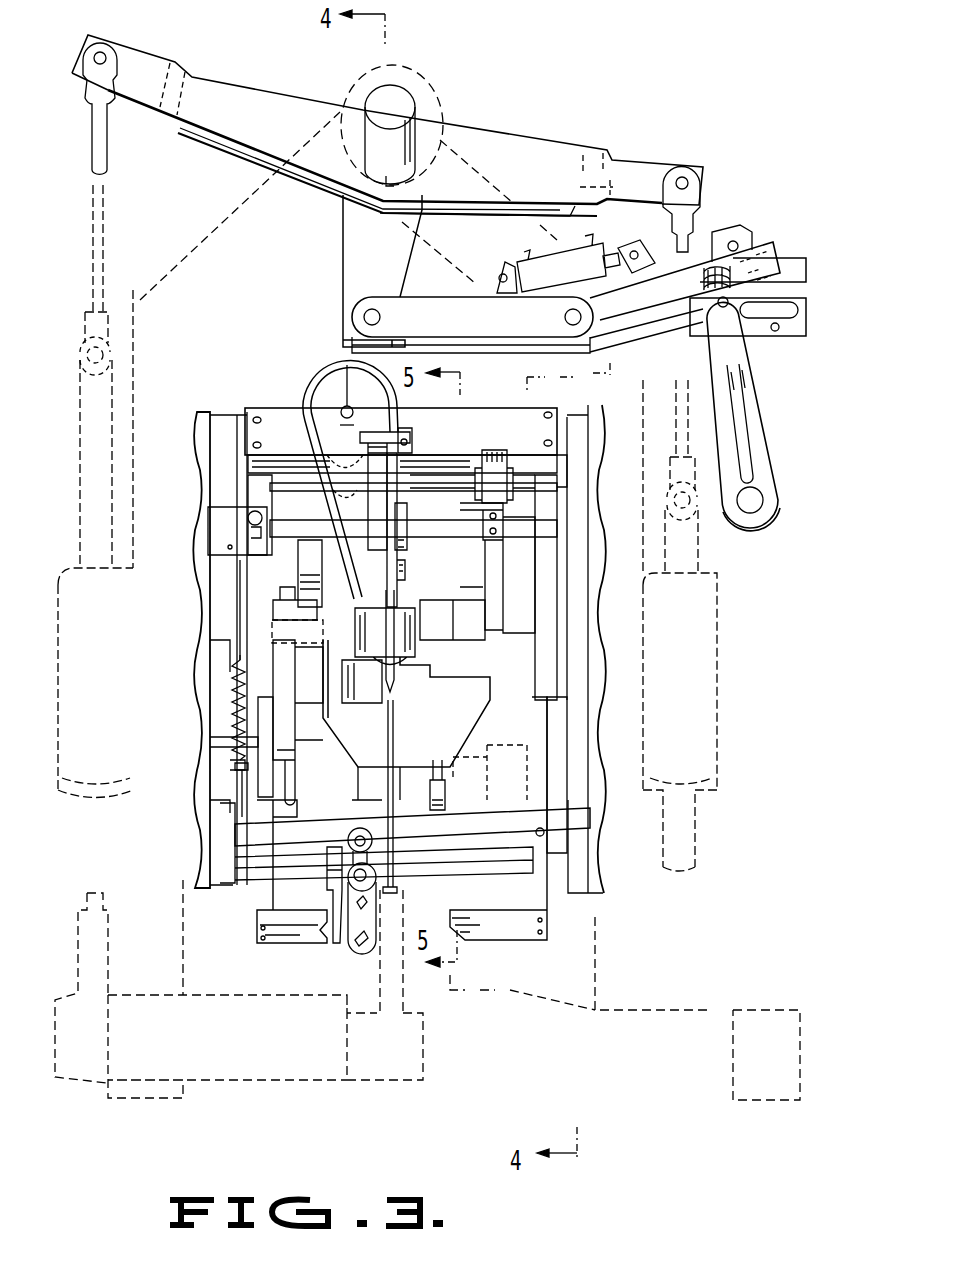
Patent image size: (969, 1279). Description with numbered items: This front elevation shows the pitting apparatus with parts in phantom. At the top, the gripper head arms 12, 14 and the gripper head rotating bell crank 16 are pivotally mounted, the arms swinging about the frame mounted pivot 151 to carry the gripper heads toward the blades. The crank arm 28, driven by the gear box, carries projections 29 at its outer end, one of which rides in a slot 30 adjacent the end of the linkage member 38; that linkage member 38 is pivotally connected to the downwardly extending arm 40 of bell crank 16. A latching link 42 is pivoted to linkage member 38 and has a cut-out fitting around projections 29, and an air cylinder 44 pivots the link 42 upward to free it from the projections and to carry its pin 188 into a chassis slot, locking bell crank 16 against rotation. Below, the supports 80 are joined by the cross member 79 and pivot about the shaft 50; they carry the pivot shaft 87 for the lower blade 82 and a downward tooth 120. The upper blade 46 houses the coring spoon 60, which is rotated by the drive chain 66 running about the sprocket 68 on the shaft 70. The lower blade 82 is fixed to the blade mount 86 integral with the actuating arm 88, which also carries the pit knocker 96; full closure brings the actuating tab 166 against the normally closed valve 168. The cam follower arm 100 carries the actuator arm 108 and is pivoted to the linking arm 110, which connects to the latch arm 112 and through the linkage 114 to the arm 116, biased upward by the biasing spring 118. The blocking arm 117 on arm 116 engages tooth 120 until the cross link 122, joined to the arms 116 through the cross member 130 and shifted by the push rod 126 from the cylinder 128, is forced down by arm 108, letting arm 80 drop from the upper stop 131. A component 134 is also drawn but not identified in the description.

The gripper head arm 12 is at (484, 175).
The gripper head arm 14 is at (232, 208).
The gripper head rotating bell crank 16 is at (238, 97).
The frame mounted pivot 151 is at (400, 100).
The downwardly extending arm 40 is at (343, 291).
The air cylinder 44 is at (521, 263).
The latching link 42 is at (690, 270).
The pin 188 is at (736, 230).
The linkage member 38 is at (795, 337).
The slot 30 is at (776, 332).
The projections 29 is at (716, 323).
The crank arm 28 is at (760, 434).
The arm 116 is at (258, 785).
The cross member 79 is at (262, 407).
The shaft 50 is at (245, 472).
The drive chain 66 is at (312, 395).
The sprocket 68 is at (325, 378).
The shaft 70 is at (345, 367).
The normally closed valve 168 is at (412, 423).
The actuating tab 166 is at (403, 467).
The supports 80 is at (252, 500).
The actuating arm 88 is at (497, 570).
The upper stop 131 is at (250, 530).
The latch arm 112 is at (300, 570).
The block 134 is at (275, 605).
The tooth 120 is at (255, 683).
The blocking arm 117 is at (278, 700).
The biasing spring 118 is at (270, 747).
The linkage 114 is at (295, 777).
The pit knocker 96 is at (403, 548).
The coring spoon 60 is at (400, 600).
The pivot shaft 87 is at (440, 625).
The blade 46 is at (383, 682).
The blade mount 86 is at (445, 754).
The lower blade 82 is at (393, 885).
The cam follower arm 100 is at (455, 777).
The actuator arm 108 is at (440, 795).
The linking arm 110 is at (237, 823).
The cross link 122 is at (300, 843).
The push rod 126 is at (348, 873).
The cylinder 128 is at (346, 935).
The cross member 130 is at (492, 940).